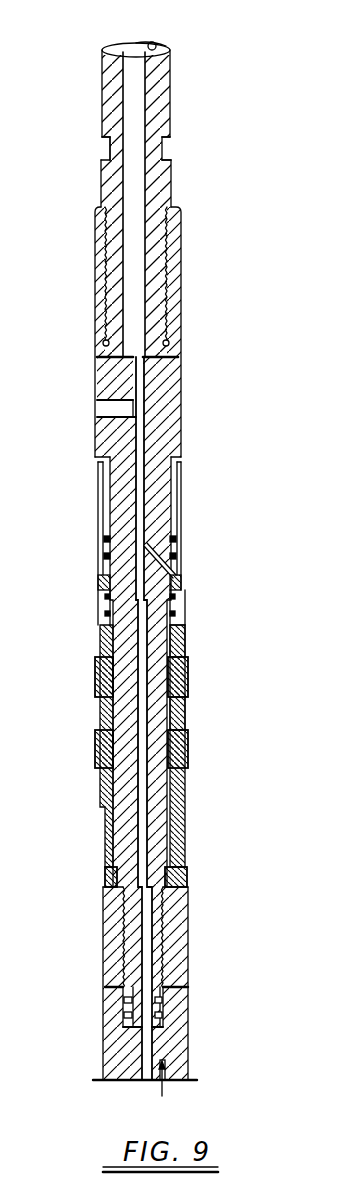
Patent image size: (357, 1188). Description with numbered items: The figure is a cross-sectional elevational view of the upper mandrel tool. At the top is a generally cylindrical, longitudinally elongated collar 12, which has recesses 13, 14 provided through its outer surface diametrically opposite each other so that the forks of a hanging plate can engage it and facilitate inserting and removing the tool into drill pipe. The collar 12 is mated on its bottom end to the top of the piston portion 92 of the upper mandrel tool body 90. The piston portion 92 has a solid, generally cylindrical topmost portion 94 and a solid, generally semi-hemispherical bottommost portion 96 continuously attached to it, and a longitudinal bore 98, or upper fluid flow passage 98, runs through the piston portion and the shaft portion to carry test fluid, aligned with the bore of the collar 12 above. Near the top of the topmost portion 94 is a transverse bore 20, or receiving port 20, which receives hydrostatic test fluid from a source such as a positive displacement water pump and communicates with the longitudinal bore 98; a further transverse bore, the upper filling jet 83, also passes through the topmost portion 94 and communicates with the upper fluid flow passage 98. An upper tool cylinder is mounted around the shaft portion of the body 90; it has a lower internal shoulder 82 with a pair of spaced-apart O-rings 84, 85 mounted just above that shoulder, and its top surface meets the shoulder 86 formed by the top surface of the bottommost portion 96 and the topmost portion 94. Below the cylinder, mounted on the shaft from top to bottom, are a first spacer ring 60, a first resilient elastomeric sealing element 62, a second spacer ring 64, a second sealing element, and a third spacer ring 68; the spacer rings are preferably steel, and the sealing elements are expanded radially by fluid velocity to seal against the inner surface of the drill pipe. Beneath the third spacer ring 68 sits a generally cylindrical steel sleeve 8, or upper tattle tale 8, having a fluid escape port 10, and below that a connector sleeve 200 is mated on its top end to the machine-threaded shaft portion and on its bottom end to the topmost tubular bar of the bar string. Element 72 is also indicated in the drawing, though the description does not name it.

The upper tattle tale 8 is at (185, 848).
The fluid escape port 10 is at (187, 882).
The collar 12 is at (142, 115).
The recess 13 is at (105, 143).
The recess 14 is at (160, 137).
The transverse bore 20 is at (100, 410).
The first spacer ring 60 is at (186, 642).
The first sealing element 62 is at (188, 680).
The second spacer ring 64 is at (185, 717).
The third spacer ring 68 is at (188, 783).
The fishing neck 72 is at (172, 65).
The internal shoulder 82 is at (103, 542).
The upper filling jet 83 is at (178, 578).
The O-ring 84 is at (182, 533).
The O-ring 85 is at (182, 553).
The shoulder 86 is at (98, 461).
The upper mandrel tool body 90 is at (96, 600).
The piston portion 92 is at (182, 437).
The topmost portion 94 is at (157, 413).
The bottommost portion 96 is at (120, 488).
The longitudinal bore 98 is at (182, 385).
The connector sleeve 200 is at (178, 948).